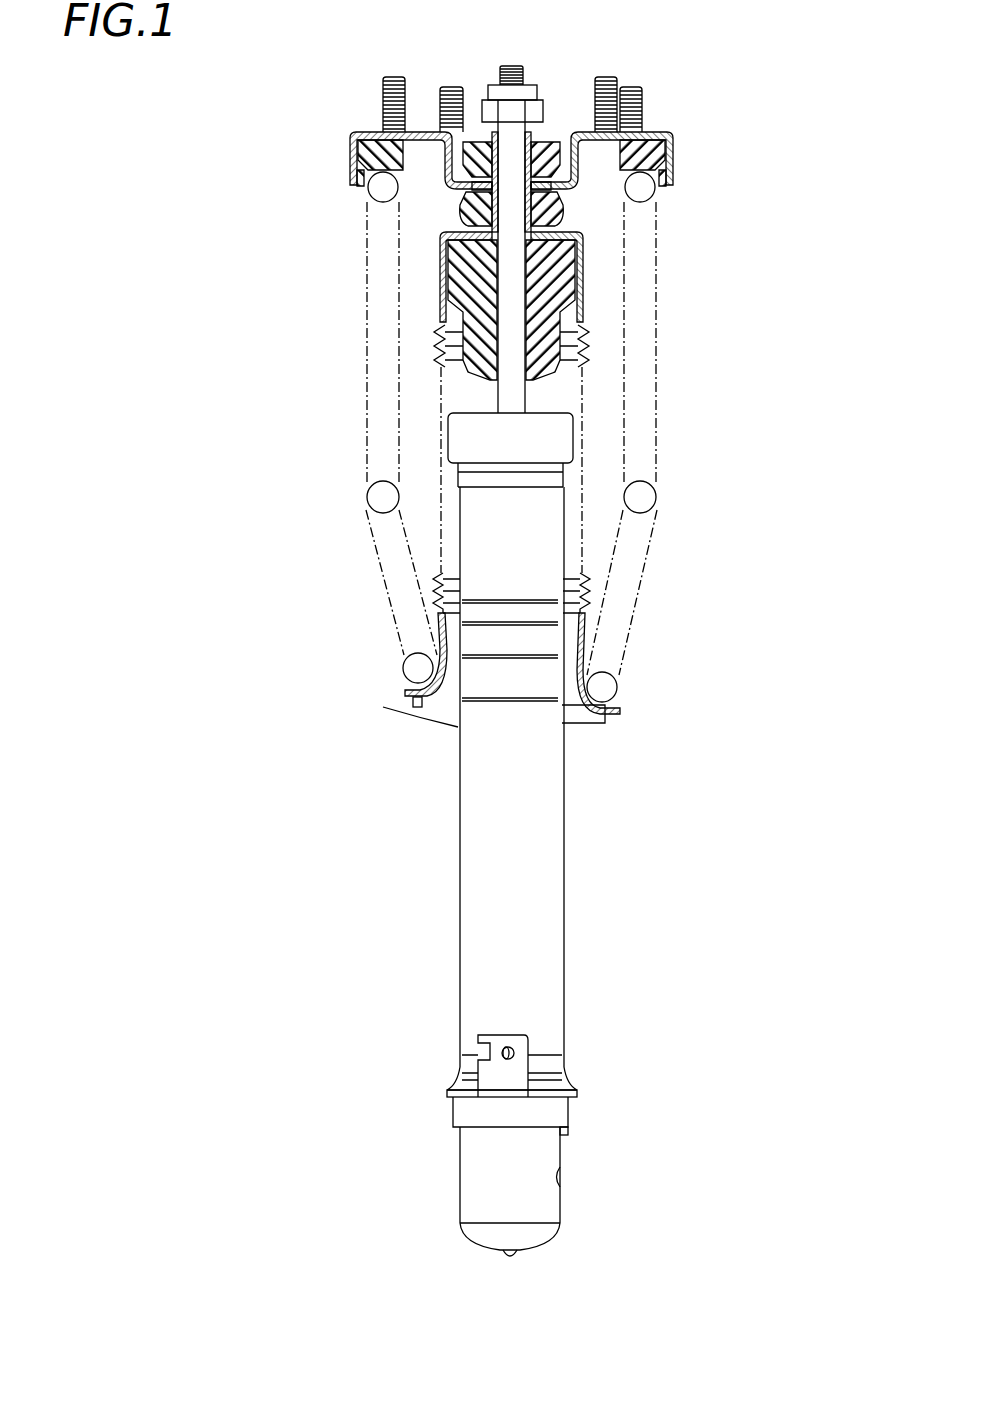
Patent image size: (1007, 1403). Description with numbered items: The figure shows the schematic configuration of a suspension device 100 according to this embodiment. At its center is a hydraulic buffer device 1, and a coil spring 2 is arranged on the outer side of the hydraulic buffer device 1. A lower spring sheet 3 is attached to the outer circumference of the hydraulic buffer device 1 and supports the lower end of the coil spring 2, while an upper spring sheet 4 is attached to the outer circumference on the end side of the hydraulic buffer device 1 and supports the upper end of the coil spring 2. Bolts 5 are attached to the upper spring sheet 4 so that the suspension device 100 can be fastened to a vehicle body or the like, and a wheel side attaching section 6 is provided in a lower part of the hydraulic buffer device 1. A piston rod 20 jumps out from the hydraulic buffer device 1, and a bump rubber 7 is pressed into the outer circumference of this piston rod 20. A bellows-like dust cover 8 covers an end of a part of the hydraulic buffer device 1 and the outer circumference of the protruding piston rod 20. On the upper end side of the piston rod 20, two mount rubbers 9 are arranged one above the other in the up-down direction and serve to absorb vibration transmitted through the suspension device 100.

The suspension device 100 is at (755, 84).
The hydraulic buffer device 1 is at (580, 890).
The coil spring 2 is at (365, 463).
The lower spring sheet 3 is at (410, 690).
The upper spring sheet 4 is at (352, 157).
The bolts 5 is at (383, 96).
The wheel side attaching section 6 is at (452, 1112).
The bump rubber 7 is at (553, 265).
The dust cover 8 is at (442, 573).
The mount rubbers 9 is at (553, 168).
The piston rod 20 is at (490, 401).